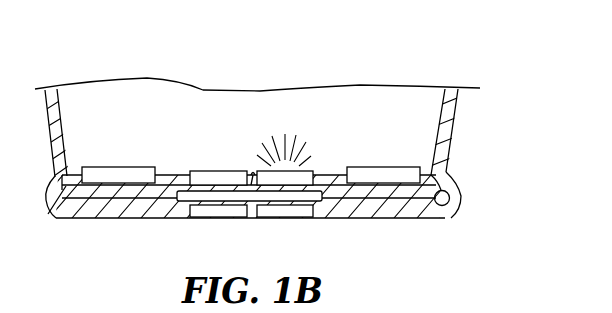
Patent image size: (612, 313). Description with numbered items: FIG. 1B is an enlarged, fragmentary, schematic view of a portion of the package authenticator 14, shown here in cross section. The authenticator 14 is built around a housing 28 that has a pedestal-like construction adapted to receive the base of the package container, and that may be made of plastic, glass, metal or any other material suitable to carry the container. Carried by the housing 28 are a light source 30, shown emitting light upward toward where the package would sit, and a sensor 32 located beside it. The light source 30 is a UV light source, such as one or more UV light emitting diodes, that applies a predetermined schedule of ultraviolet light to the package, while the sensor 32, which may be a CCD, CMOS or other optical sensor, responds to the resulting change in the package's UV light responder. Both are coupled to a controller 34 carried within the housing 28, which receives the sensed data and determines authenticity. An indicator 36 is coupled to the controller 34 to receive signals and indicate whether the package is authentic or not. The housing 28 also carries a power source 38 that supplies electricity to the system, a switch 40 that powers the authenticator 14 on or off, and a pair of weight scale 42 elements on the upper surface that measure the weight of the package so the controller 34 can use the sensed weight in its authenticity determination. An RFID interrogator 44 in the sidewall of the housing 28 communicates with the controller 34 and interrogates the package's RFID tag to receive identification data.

The package authenticator 14 is at (371, 60).
The housing 28 is at (56, 219).
The light source 30 is at (297, 172).
The sensor 32 is at (208, 173).
The controller 34 is at (323, 199).
The indicator 36 is at (223, 215).
The power source 38 is at (445, 206).
The switch 40 is at (291, 214).
The weight scale 42 is at (155, 170).
The RFID interrogator 44 is at (62, 129).